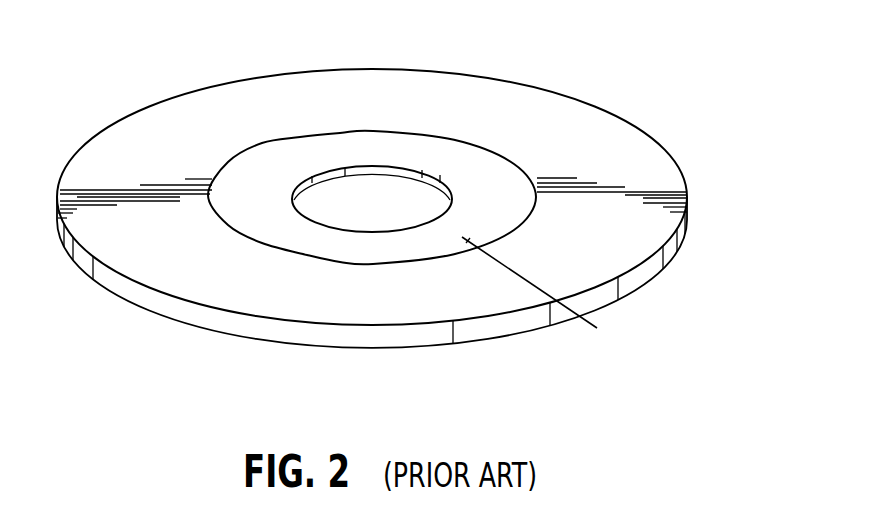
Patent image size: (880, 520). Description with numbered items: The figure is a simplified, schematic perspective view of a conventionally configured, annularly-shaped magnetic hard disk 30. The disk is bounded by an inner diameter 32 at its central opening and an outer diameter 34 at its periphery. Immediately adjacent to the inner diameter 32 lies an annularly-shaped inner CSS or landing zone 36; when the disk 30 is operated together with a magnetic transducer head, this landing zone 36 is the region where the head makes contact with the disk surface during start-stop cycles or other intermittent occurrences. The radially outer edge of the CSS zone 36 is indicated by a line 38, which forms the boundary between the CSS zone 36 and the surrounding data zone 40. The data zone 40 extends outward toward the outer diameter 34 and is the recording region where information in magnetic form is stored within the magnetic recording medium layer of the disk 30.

The magnetic hard disk 30 is at (389, 203).
The inner diameter 32 is at (300, 190).
The outer diameter 34 is at (572, 98).
The CSS zone 36 is at (312, 239).
The line 38 is at (546, 291).
The data zone 40 is at (600, 150).